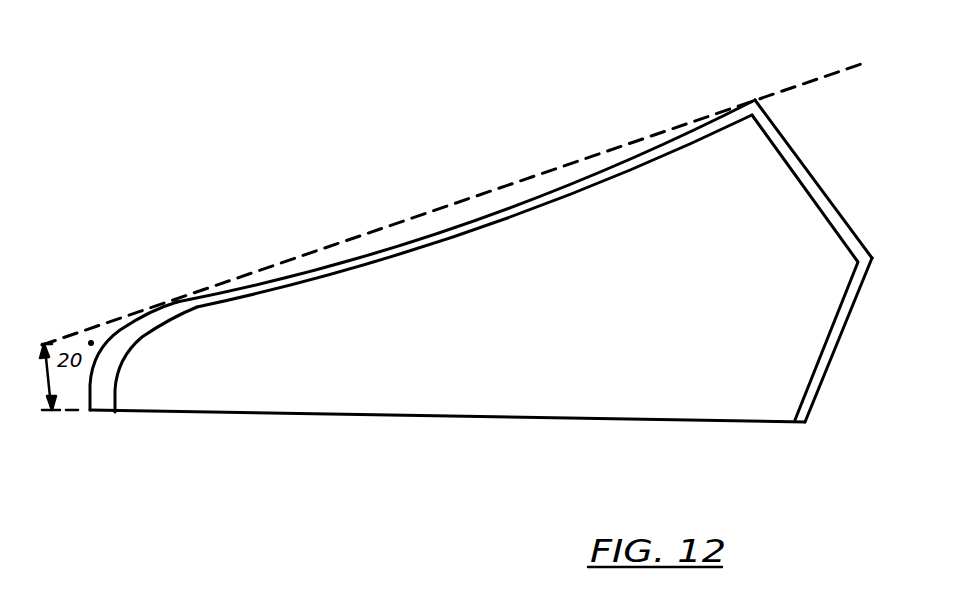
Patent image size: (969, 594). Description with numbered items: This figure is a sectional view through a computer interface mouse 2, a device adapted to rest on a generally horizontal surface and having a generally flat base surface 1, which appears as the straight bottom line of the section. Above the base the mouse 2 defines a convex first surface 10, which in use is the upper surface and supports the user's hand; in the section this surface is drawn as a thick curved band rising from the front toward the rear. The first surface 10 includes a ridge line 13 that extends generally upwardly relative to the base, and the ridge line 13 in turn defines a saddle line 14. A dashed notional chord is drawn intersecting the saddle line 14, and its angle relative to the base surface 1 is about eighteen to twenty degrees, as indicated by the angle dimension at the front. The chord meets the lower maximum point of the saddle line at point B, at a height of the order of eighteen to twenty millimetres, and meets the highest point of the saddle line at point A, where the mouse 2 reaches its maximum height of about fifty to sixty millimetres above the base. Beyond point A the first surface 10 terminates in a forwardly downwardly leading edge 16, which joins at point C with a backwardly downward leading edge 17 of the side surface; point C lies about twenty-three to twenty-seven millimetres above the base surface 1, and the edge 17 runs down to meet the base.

The base surface 1 is at (497, 420).
The mouse 2 is at (788, 232).
The first surface 10 is at (540, 197).
The ridge line 13 is at (457, 230).
The saddle line 14 is at (357, 260).
The forwardly downwardly leading edge 16 is at (812, 165).
The backwardly downward leading edge 17 is at (823, 380).
The point A is at (755, 100).
The point B is at (177, 302).
The point C is at (876, 258).